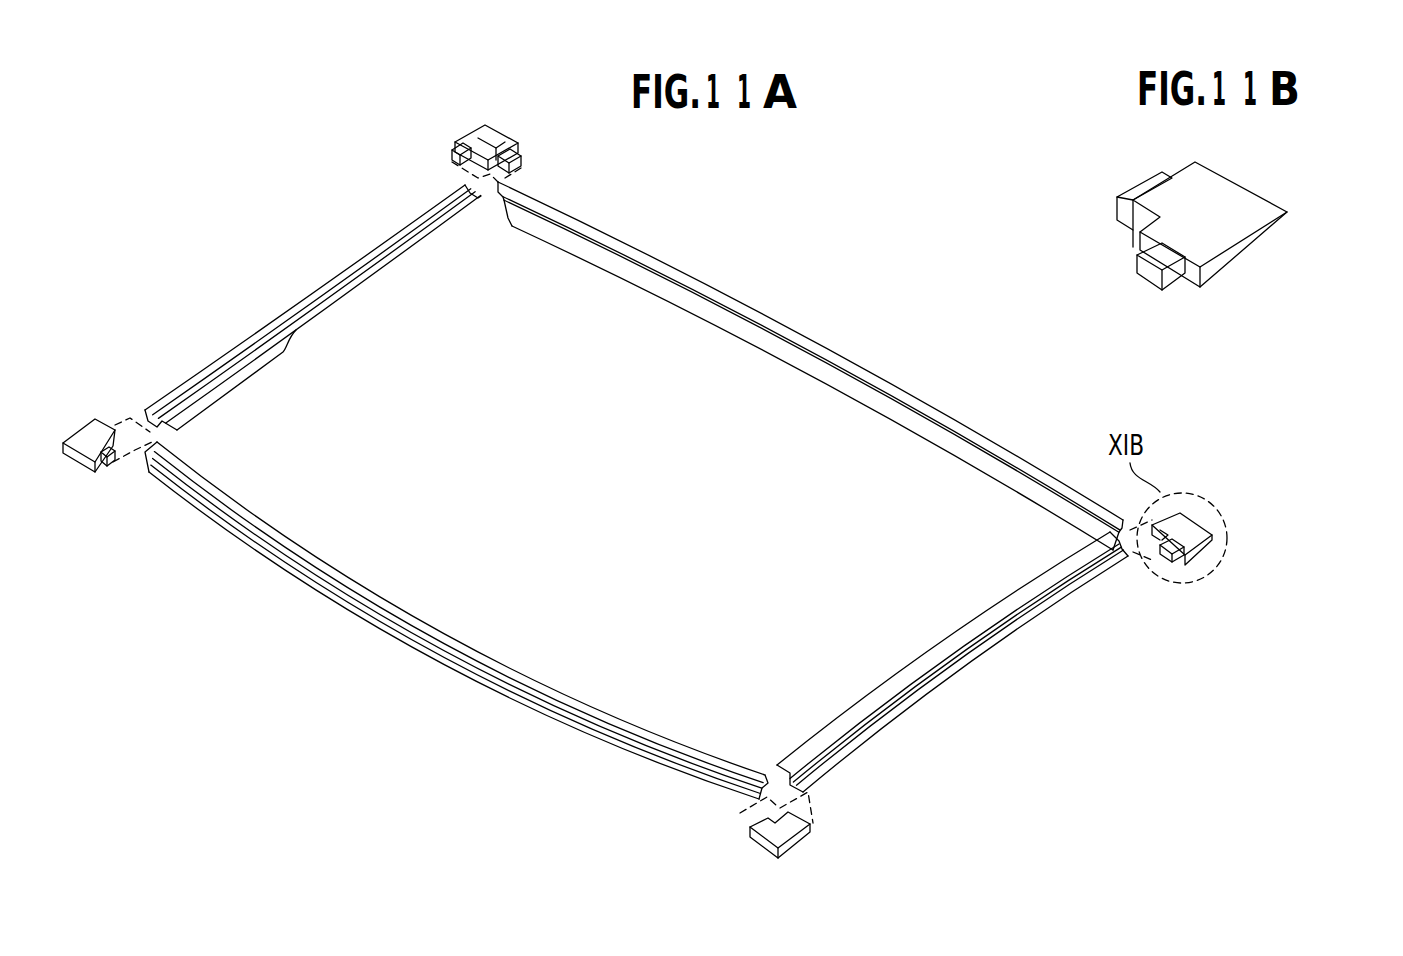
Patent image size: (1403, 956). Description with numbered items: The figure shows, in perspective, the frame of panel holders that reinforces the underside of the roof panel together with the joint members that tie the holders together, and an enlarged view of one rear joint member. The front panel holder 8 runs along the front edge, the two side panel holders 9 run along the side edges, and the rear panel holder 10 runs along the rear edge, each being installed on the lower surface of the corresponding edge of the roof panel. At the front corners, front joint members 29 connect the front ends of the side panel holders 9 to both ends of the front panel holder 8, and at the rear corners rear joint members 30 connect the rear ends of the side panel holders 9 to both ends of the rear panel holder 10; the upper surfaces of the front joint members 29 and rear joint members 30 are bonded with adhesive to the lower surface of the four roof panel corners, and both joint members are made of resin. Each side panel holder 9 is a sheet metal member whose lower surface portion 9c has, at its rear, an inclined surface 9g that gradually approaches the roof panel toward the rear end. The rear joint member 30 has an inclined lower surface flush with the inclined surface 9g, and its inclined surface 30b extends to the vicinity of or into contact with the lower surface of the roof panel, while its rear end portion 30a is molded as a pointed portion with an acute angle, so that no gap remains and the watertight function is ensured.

In FIG. 11A, the front panel holder 8 is at (415, 645).
In FIG. 11A, the side panel holder 9 is at (307, 297).
In FIG. 11A, the lower surface portion 9c is at (897, 725).
In FIG. 11A, the inclined surface 9g is at (1075, 598).
In FIG. 11A, the rear panel holder 10 is at (834, 370).
In FIG. 11A, the front joint member 29 is at (80, 440).
In FIG. 11A, the rear joint member 30 is at (490, 142).
In FIG. 11B, the rear joint member 30 is at (1241, 262).
In FIG. 11B, the rear end portion 30a is at (1288, 212).
In FIG. 11B, the inclined surface 30b is at (1250, 247).